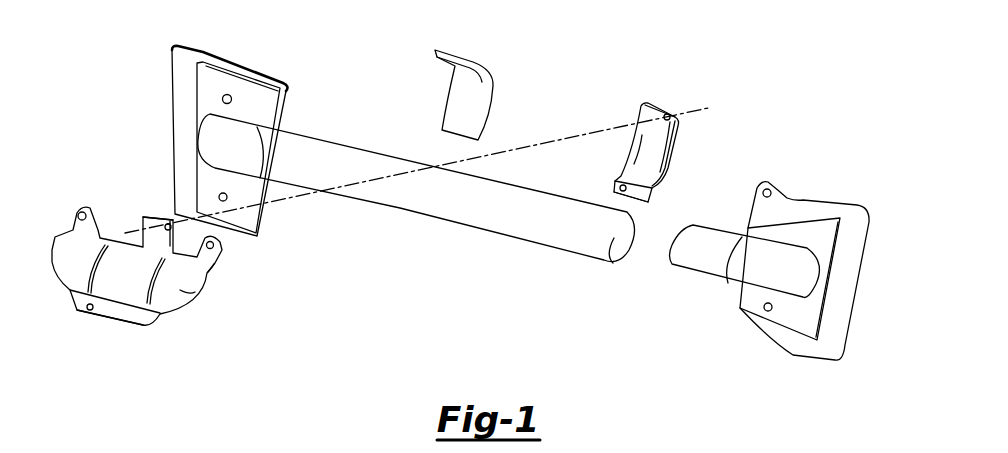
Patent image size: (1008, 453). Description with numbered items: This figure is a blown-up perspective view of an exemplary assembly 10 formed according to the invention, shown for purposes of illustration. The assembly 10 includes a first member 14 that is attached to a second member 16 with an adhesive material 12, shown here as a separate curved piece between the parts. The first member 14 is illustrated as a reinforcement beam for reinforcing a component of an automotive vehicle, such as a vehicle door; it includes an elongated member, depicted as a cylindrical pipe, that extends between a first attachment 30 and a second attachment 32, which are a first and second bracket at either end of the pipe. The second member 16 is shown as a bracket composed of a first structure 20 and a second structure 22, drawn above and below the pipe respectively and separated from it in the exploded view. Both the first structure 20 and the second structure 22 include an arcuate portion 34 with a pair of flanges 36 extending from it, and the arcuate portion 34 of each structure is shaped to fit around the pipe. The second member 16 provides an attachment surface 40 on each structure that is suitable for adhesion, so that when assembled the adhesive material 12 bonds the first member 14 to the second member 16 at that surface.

The assembly 10 is at (723, 63).
The adhesive material 12 is at (503, 93).
The first member 14 is at (352, 222).
The second member 16 is at (643, 248).
The first structure 20 is at (687, 130).
The second structure 22 is at (160, 350).
The first attachment 30 is at (264, 92).
The second attachment 32 is at (835, 357).
The arcuate portion 34 is at (670, 178).
The flanges 36 is at (643, 110).
The attachment surface 40 is at (634, 163).